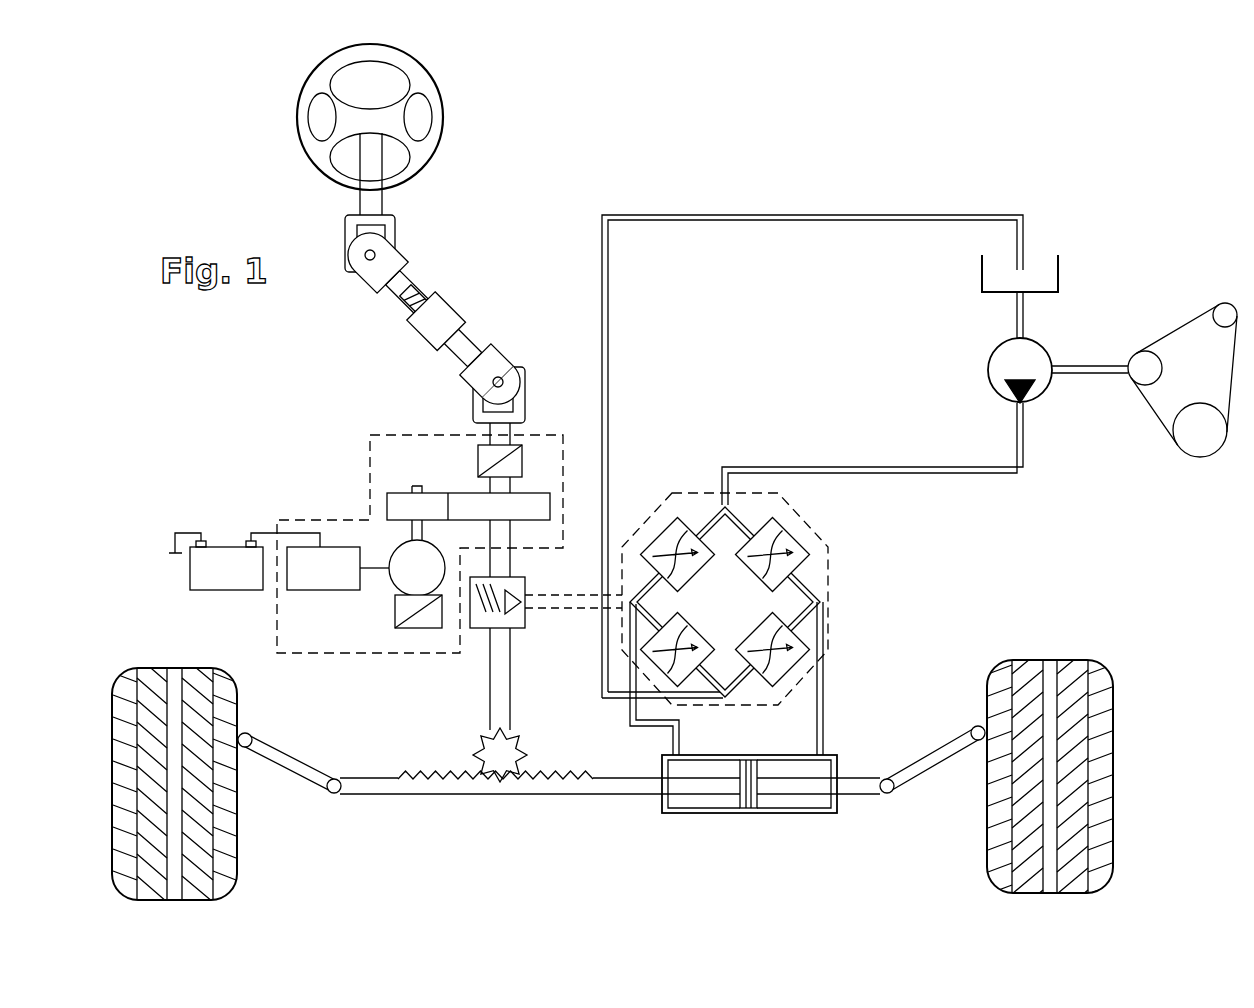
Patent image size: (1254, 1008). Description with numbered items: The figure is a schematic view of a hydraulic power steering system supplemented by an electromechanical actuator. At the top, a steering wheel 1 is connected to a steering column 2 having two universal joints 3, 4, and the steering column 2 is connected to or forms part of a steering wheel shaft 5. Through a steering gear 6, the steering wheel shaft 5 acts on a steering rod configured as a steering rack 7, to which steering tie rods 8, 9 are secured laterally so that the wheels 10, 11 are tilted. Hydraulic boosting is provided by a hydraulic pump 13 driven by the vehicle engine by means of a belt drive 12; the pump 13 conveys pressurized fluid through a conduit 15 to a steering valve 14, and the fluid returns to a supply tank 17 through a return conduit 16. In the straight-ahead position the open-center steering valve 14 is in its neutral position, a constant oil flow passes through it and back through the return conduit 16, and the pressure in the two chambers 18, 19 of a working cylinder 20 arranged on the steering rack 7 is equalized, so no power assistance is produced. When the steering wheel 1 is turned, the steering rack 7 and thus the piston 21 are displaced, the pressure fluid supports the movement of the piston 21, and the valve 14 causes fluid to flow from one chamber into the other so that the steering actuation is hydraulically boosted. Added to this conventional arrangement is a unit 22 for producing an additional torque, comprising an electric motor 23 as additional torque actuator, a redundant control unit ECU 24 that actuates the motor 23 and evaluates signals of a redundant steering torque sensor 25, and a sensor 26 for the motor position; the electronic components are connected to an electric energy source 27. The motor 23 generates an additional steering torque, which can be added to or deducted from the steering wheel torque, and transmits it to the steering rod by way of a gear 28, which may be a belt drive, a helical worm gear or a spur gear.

The steering wheel 1 is at (443, 105).
The steering column 2 is at (453, 303).
The universal joint 3 is at (397, 232).
The universal joint 4 is at (530, 378).
The steering wheel shaft 5 is at (487, 430).
The steering gear 6 is at (478, 760).
The steering rack 7 is at (598, 782).
The steering tie rod 8 is at (285, 772).
The steering tie rod 9 is at (937, 765).
The wheel 10 is at (120, 670).
The wheel 11 is at (1103, 665).
The belt drive 12 is at (1197, 313).
The hydraulic pump 13 is at (1040, 402).
The steering valve 14 is at (817, 538).
The conduit 15 is at (826, 467).
The return conduit 16 is at (826, 215).
The supply tank 17 is at (1062, 268).
The chamber 18 is at (690, 803).
The chamber 19 is at (808, 803).
The working cylinder 20 is at (840, 763).
The piston 21 is at (750, 803).
The unit for producing an additional torque 22 is at (277, 620).
The electric motor 23 is at (393, 588).
The control unit ECU 24 is at (338, 545).
The steering torque sensor 25 is at (523, 458).
The sensor for the motor position 26 is at (397, 615).
The electric energy source 27 is at (228, 545).
The gear 28 is at (437, 492).